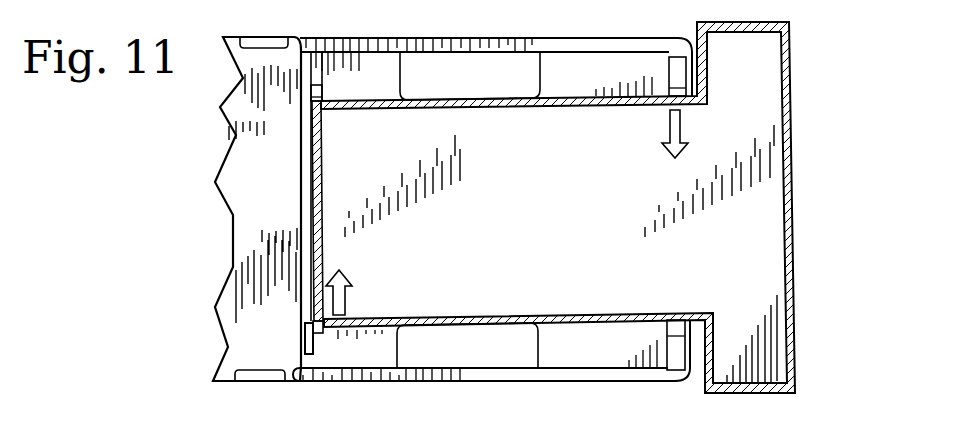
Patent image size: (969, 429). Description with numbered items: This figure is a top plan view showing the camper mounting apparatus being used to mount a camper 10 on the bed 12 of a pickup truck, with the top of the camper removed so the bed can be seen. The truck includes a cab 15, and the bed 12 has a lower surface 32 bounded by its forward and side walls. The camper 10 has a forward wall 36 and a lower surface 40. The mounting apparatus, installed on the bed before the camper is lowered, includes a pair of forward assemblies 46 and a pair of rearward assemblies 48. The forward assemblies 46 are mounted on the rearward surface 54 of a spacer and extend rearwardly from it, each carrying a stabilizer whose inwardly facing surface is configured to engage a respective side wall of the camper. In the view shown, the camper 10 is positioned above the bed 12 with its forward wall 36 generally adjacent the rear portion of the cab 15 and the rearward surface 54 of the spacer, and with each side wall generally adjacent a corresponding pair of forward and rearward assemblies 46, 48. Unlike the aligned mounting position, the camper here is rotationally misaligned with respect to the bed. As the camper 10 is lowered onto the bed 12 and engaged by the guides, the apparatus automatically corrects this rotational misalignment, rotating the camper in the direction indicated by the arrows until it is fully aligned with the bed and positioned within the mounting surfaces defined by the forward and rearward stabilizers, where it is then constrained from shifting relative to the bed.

The camper 10 is at (808, 80).
The bed 12 is at (473, 30).
The cab 15 is at (262, 28).
The lower surface 32 is at (593, 85).
The forward wall 36 is at (318, 250).
The lower surface 40 is at (510, 236).
The forward assemblies 46 is at (334, 92).
The rearward assemblies 48 is at (676, 44).
The rearward surface 54 is at (314, 287).